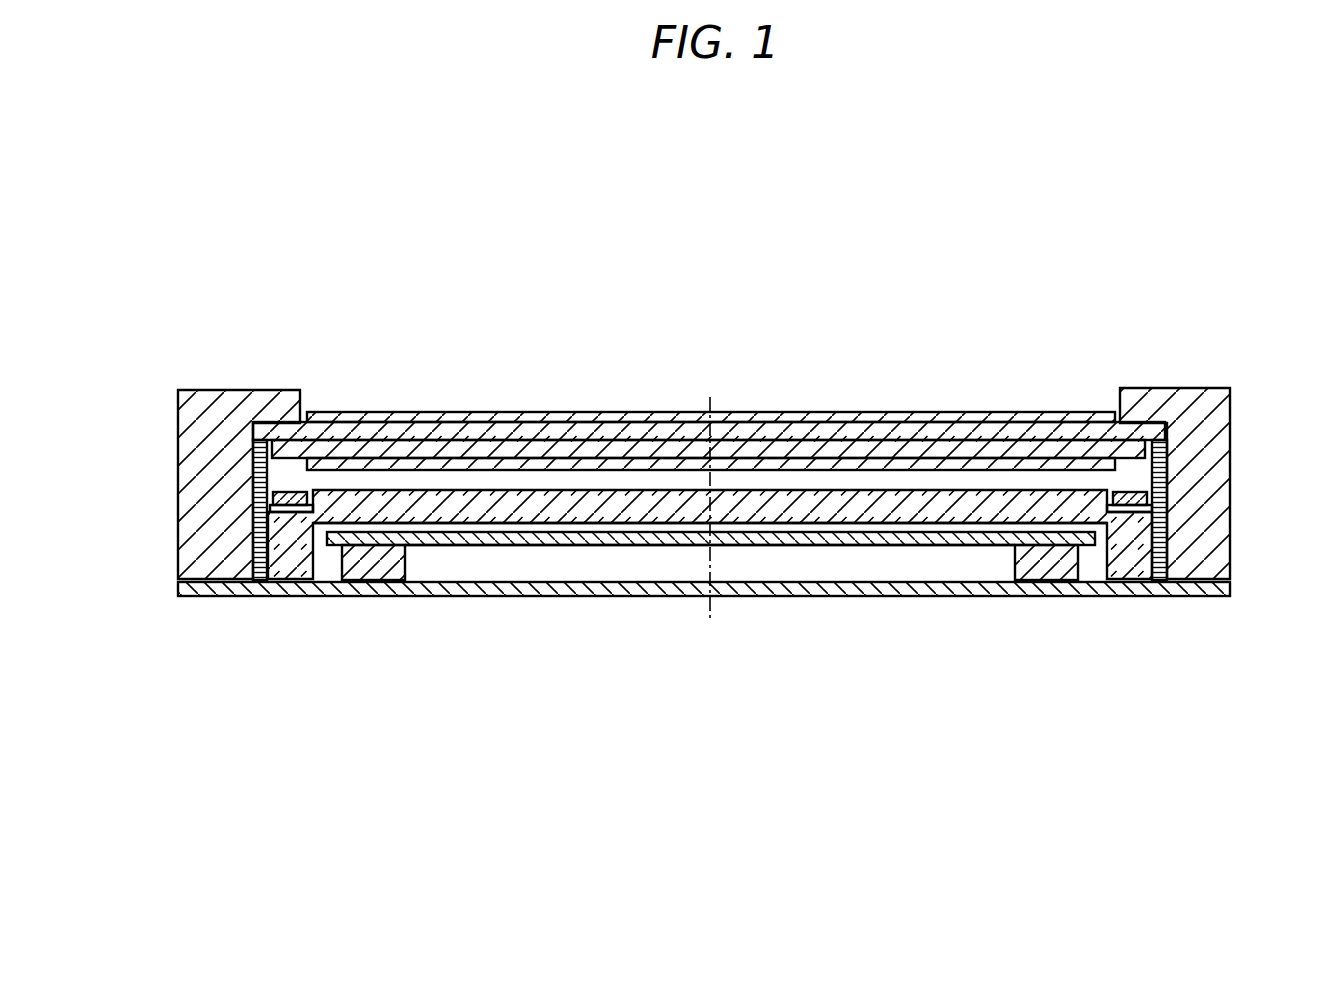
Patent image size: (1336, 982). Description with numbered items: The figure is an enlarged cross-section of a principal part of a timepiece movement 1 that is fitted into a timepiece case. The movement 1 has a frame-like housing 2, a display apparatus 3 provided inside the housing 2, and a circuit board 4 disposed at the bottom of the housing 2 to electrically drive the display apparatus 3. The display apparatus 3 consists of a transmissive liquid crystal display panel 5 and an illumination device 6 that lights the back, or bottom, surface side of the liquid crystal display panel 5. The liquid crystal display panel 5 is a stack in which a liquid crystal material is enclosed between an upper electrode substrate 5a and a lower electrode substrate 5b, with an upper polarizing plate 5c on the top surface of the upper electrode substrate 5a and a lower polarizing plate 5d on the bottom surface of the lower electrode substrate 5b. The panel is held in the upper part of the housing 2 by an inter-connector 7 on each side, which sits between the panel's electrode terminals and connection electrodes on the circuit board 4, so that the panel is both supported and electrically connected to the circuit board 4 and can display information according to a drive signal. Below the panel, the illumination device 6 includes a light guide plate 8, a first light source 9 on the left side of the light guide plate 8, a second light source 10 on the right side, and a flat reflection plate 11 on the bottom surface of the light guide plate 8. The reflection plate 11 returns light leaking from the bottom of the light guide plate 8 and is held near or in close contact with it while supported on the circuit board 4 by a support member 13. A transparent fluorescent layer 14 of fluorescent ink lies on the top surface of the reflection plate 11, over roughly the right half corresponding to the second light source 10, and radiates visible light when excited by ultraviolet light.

The movement 1 is at (197, 363).
The housing 2 is at (220, 458).
The display apparatus 3 is at (532, 280).
The circuit board 4 is at (663, 593).
The liquid crystal display panel 5 is at (505, 435).
The upper electrode substrate 5a is at (923, 427).
The lower electrode substrate 5b is at (970, 445).
The upper polarizing plate 5c is at (875, 415).
The lower polarizing plate 5d is at (1015, 465).
The illumination device 6 is at (680, 487).
The inter-connector 7 is at (257, 535).
The light guide plate 8 is at (917, 492).
The first light source 9 is at (298, 492).
The second light source 10 is at (1125, 492).
The reflection plate 11 is at (568, 545).
The support member 13 is at (373, 565).
The transparent fluorescent layer 14 is at (840, 530).